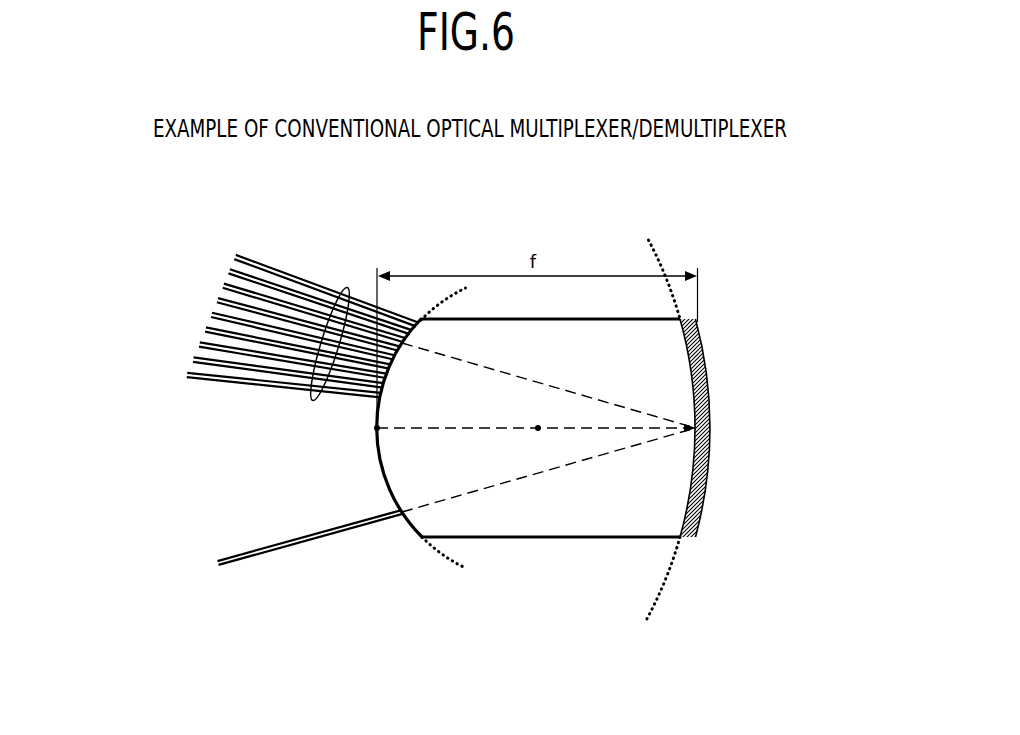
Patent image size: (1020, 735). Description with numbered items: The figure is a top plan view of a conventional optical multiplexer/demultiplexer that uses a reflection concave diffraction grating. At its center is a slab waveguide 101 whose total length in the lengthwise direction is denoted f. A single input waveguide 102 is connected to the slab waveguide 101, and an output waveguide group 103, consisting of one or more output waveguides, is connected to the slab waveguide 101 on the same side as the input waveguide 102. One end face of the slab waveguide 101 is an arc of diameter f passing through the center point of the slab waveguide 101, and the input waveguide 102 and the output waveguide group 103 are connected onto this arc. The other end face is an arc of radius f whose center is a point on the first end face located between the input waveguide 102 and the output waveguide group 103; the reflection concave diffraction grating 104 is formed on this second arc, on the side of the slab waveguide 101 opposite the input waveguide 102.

The slab waveguide 101 is at (565, 537).
The input waveguide 102 is at (308, 538).
The output waveguide group 103 is at (343, 287).
The concave diffraction grating 104 is at (707, 387).